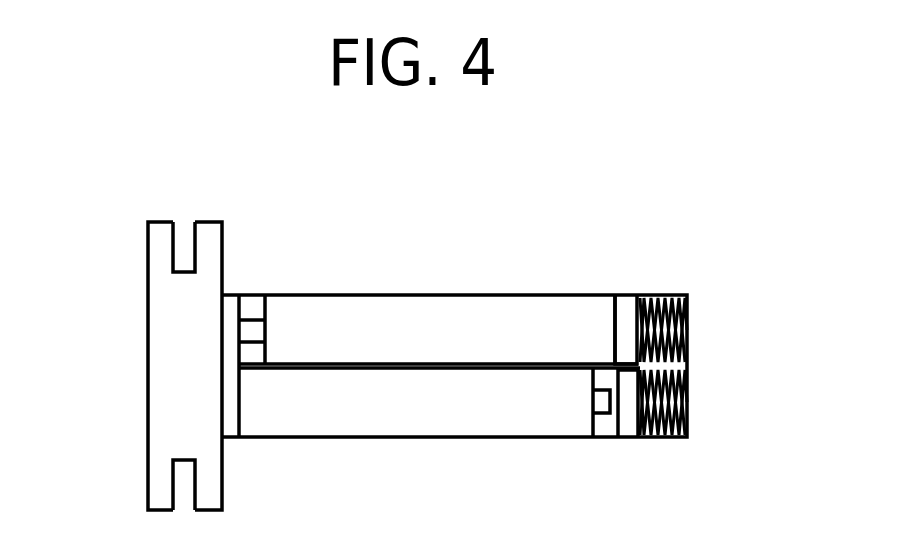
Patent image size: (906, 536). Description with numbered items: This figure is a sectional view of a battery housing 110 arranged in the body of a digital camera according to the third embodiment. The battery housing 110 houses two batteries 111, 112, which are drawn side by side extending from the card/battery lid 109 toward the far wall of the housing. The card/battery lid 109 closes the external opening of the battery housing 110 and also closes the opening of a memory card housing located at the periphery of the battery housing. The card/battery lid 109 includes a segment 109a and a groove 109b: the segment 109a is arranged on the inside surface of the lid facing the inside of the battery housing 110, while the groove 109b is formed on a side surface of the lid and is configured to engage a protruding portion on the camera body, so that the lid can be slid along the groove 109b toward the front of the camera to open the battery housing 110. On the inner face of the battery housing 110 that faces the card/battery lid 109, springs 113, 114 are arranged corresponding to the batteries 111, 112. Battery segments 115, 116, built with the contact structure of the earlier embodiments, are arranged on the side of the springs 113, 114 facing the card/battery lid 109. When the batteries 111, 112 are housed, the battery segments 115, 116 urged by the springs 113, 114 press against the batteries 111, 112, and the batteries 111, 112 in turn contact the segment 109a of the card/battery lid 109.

The card/battery lid 109 is at (148, 352).
The segment 109a is at (230, 432).
The groove 109b is at (190, 232).
The battery housing 110 is at (565, 232).
The battery 111 is at (413, 305).
The battery 112 is at (433, 432).
The spring 113 is at (680, 342).
The spring 114 is at (680, 408).
The battery segment 115 is at (622, 303).
The battery segment 116 is at (627, 432).